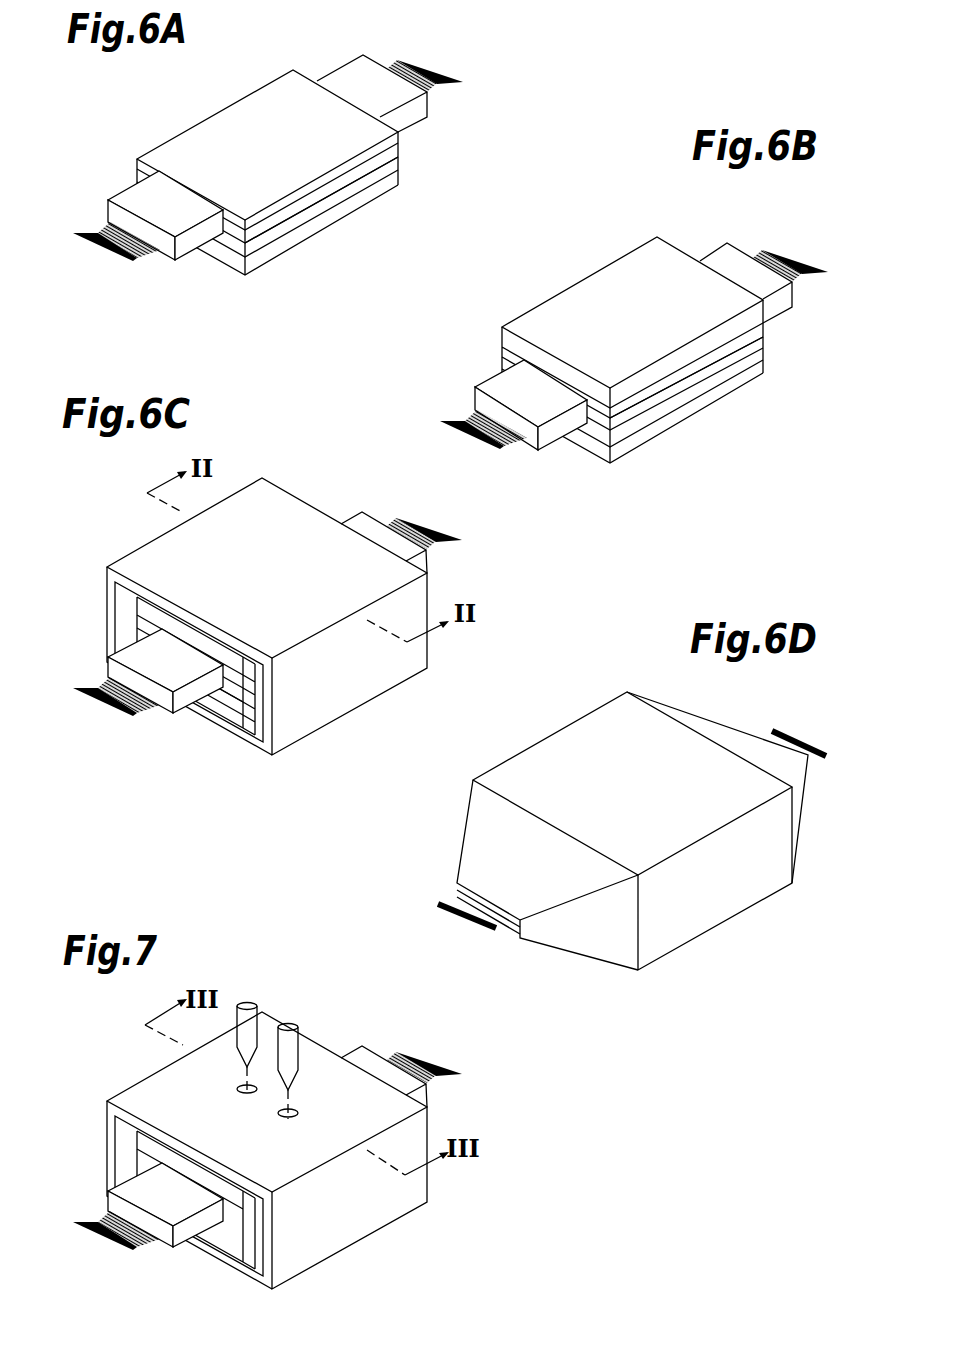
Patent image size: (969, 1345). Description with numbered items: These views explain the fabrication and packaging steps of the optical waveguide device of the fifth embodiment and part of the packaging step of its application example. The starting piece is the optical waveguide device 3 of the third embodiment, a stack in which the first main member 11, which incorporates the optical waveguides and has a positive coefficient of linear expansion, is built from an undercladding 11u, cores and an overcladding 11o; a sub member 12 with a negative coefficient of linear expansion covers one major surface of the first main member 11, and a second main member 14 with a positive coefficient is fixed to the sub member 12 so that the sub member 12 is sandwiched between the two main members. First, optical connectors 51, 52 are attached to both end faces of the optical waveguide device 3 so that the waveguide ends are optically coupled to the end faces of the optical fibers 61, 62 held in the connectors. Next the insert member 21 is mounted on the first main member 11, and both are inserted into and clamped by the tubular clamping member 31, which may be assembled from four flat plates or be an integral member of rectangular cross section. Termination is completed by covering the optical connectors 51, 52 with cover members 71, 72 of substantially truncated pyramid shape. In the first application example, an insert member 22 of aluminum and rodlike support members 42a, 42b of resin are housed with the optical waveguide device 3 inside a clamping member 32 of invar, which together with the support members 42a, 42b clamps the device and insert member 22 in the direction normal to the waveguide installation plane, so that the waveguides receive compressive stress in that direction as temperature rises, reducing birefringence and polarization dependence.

In FIG. 6A, the optical waveguide device 3 is at (526, 145).
In FIG. 6B, the optical waveguide device 3 is at (891, 333).
In FIG. 6C, the optical waveguide device 3 is at (202, 836).
In FIG. 7, the optical waveguide device 3 is at (228, 1238).
In FIG. 6A, the first main member 11 is at (479, 132).
In FIG. 6B, the first main member 11 is at (843, 322).
In FIG. 6C, the first main member 11 is at (203, 802).
In FIG. 6A, the undercladding 11u is at (400, 137).
In FIG. 6B, the undercladding 11u is at (764, 328).
In FIG. 6C, the undercladding 11u is at (252, 676).
In FIG. 6A, the overcladding 11o is at (400, 150).
In FIG. 6B, the overcladding 11o is at (764, 342).
In FIG. 6C, the overcladding 11o is at (240, 689).
In FIG. 6A, the sub member 12 is at (400, 164).
In FIG. 6B, the sub member 12 is at (764, 357).
In FIG. 6C, the sub member 12 is at (228, 701).
In FIG. 6A, the second main member 14 is at (400, 178).
In FIG. 6B, the second main member 14 is at (764, 373).
In FIG. 6C, the second main member 14 is at (210, 703).
In FIG. 6B, the insert member 21 is at (533, 315).
In FIG. 6C, the insert member 21 is at (142, 605).
In FIG. 7, the insert member 22 is at (143, 1147).
In FIG. 6C, the clamping member 31 is at (365, 690).
In FIG. 6D, the clamping member 31 is at (727, 903).
In FIG. 7, the clamping member 32 is at (363, 1223).
In FIG. 7, the support member 42a is at (248, 1003).
In FIG. 7, the support member 42b is at (290, 1027).
In FIG. 6A, the optical connector 51 is at (132, 197).
In FIG. 6B, the optical connector 51 is at (497, 383).
In FIG. 6C, the optical connector 51 is at (128, 650).
In FIG. 7, the optical connector 51 is at (130, 1183).
In FIG. 6A, the optical connector 52 is at (342, 72).
In FIG. 6B, the optical connector 52 is at (713, 262).
In FIG. 6C, the optical connector 52 is at (358, 522).
In FIG. 7, the optical connector 52 is at (355, 1053).
In FIG. 6A, the optical fiber 61 is at (108, 230).
In FIG. 6B, the optical fiber 61 is at (473, 417).
In FIG. 6C, the optical fiber 61 is at (105, 682).
In FIG. 6D, the optical fiber 61 is at (450, 902).
In FIG. 7, the optical fiber 61 is at (103, 1213).
In FIG. 6A, the optical fiber 62 is at (397, 62).
In FIG. 6B, the optical fiber 62 is at (763, 252).
In FIG. 6C, the optical fiber 62 is at (397, 522).
In FIG. 6D, the optical fiber 62 is at (812, 757).
In FIG. 7, the optical fiber 62 is at (395, 1052).
In FIG. 6D, the cover member 71 is at (555, 938).
In FIG. 6D, the cover member 72 is at (800, 807).